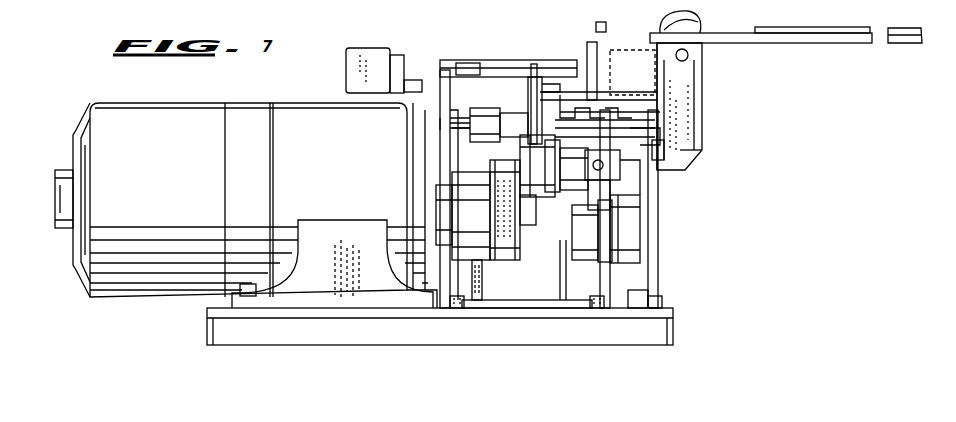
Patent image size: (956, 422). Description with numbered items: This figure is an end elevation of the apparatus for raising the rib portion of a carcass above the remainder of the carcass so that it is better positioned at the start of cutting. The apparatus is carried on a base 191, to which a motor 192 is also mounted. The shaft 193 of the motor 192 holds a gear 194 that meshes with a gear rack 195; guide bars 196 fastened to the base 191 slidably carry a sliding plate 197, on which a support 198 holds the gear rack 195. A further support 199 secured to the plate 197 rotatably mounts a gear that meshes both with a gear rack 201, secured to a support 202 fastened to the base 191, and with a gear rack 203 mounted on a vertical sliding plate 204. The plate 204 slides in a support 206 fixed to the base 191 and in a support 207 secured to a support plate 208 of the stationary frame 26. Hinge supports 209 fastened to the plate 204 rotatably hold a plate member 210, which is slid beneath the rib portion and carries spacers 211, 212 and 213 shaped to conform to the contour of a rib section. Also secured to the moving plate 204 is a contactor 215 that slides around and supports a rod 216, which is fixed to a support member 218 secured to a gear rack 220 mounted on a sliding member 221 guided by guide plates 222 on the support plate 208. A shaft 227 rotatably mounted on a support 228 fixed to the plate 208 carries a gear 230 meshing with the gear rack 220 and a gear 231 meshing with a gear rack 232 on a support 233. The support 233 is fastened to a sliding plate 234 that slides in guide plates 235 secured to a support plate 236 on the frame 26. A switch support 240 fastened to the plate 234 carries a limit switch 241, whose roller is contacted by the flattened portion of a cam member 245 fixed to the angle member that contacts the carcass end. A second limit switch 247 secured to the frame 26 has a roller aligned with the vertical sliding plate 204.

The stationary frame 26 is at (648, 84).
The base 191 is at (660, 340).
The motor 192 is at (141, 130).
The shaft 193 is at (502, 210).
The gear 194 is at (478, 230).
The gear rack 195 is at (545, 235).
The guide bars 196 is at (456, 310).
The sliding plate 197 is at (502, 310).
The support 198 is at (472, 292).
The support 199 is at (624, 258).
The gear rack 201 is at (654, 266).
The support 202 is at (640, 300).
The gear rack 203 is at (628, 165).
The vertical sliding plate 204 is at (640, 285).
The support 206 is at (656, 308).
The support 207 is at (655, 130).
The support plate 208 is at (683, 100).
The hinge supports 209 is at (695, 165).
The plate member 210 is at (789, 44).
The spacer 211 is at (688, 22).
The spacer 212 is at (804, 27).
The spacer 213 is at (913, 28).
The contactor 215 is at (622, 172).
The rod 216 is at (625, 155).
The support member 218 is at (690, 150).
The gear rack 220 is at (655, 114).
The sliding member 221 is at (592, 112).
The guide plates 222 is at (568, 118).
The shaft 227 is at (526, 180).
The support 228 is at (573, 184).
The gear 230 is at (620, 192).
The gear 231 is at (550, 192).
The gear rack 232 is at (545, 135).
The support 233 is at (533, 62).
The sliding plate 234 is at (546, 77).
The guide plates 235 is at (466, 64).
The support plate 236 is at (524, 61).
The switch support 240 is at (470, 140).
The limit switch 241 is at (478, 150).
The cam member 245 is at (444, 75).
The limit switch 247 is at (372, 52).